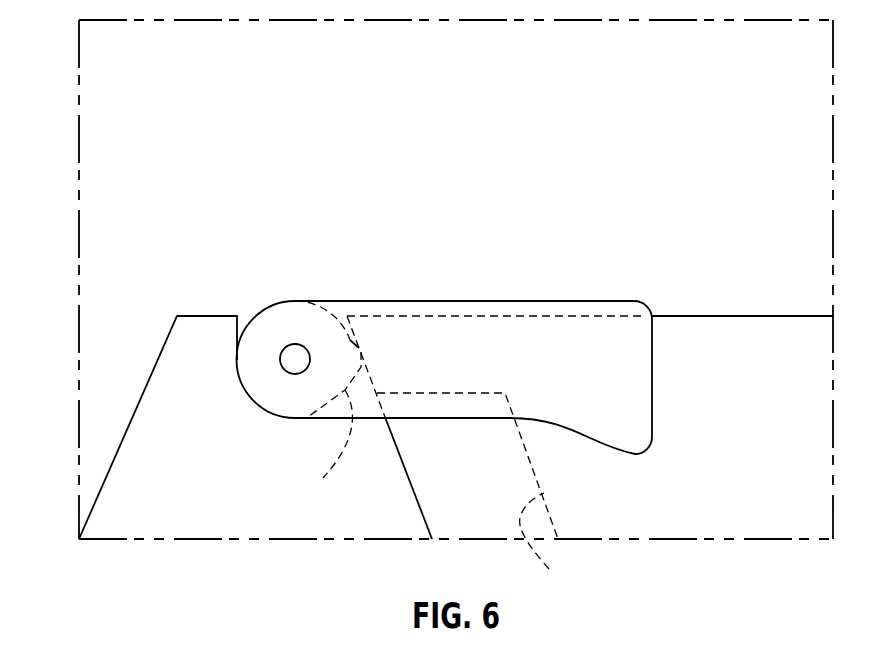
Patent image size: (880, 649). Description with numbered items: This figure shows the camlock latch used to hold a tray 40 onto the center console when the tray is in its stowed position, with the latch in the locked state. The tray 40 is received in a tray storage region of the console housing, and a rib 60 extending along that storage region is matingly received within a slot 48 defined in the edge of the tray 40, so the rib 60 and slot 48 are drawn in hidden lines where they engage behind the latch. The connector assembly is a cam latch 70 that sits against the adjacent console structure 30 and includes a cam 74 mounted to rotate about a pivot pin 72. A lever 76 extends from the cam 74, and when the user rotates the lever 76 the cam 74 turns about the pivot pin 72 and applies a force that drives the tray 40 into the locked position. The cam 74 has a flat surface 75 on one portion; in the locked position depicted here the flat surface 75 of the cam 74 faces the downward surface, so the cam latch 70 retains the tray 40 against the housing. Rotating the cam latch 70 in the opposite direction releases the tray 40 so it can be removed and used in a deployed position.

The base member 30 is at (159, 353).
The tray 40 is at (715, 316).
The slot 48 is at (547, 547).
The rib 60 is at (443, 393).
The cam latch 70 is at (327, 282).
The pivot pin 72 is at (295, 358).
The cam 74 is at (362, 350).
The flat surface 75 is at (325, 448).
The lever 76 is at (537, 302).